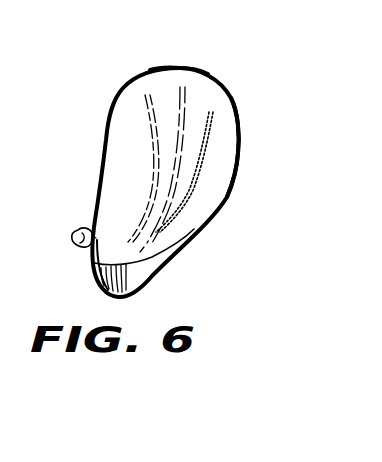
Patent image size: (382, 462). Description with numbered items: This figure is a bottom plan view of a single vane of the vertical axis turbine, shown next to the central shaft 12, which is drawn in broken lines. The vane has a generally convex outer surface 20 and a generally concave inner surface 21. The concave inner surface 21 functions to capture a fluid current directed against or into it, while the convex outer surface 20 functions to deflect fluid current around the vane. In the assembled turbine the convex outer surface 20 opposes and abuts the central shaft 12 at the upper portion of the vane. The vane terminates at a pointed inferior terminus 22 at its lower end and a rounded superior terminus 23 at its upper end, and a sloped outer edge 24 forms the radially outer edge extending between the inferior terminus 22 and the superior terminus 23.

The central shaft 12 is at (74, 231).
The convex outer surface 20 is at (143, 264).
The concave inner surface 21 is at (133, 122).
The pointed inferior terminus 22 is at (97, 280).
The rounded superior terminus 23 is at (175, 67).
The sloped outer edge 24 is at (240, 150).